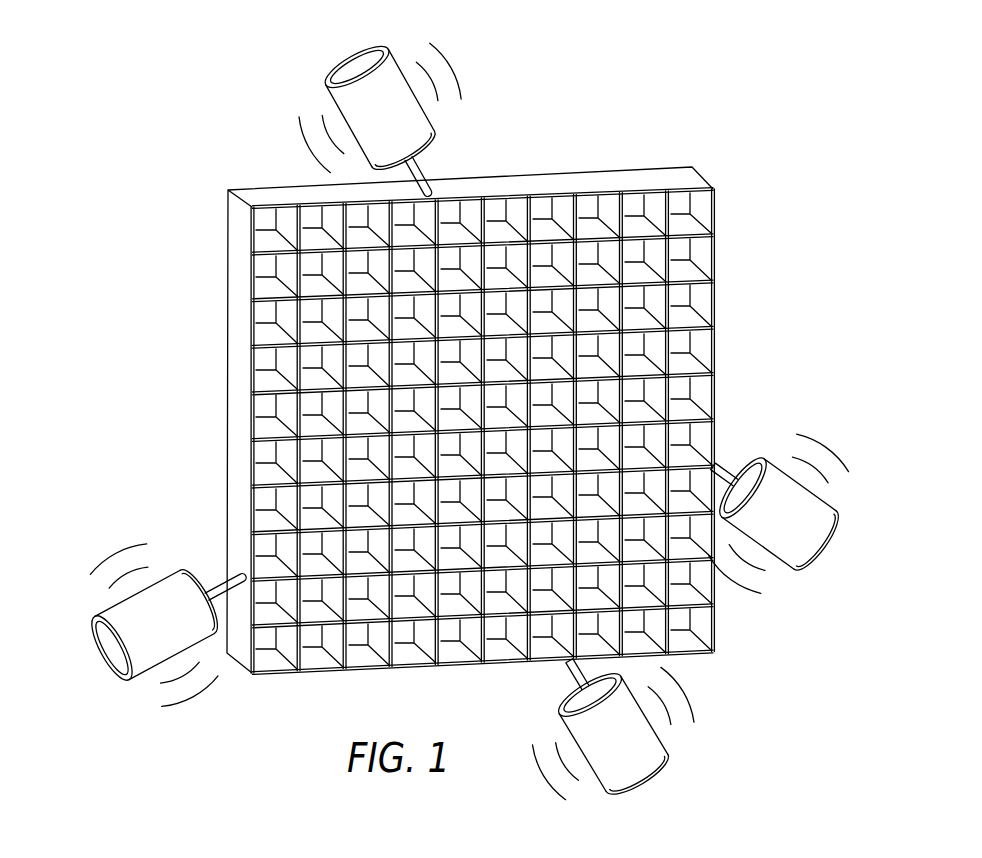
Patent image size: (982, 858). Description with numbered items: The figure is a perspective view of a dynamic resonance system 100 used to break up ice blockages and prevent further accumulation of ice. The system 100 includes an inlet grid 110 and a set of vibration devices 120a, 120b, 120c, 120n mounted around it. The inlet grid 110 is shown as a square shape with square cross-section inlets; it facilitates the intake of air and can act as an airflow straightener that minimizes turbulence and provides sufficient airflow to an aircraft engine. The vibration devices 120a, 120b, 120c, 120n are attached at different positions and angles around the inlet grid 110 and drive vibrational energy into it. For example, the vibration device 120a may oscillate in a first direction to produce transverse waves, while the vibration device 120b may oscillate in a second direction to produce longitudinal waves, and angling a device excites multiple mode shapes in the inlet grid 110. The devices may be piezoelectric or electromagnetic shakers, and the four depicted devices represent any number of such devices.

The dynamic resonance system 100 is at (466, 421).
The inlet grid 110 is at (553, 181).
The vibration device 120a is at (353, 63).
The vibration device 120b is at (108, 655).
The vibration device 120c is at (655, 777).
The vibration device 120n is at (825, 545).